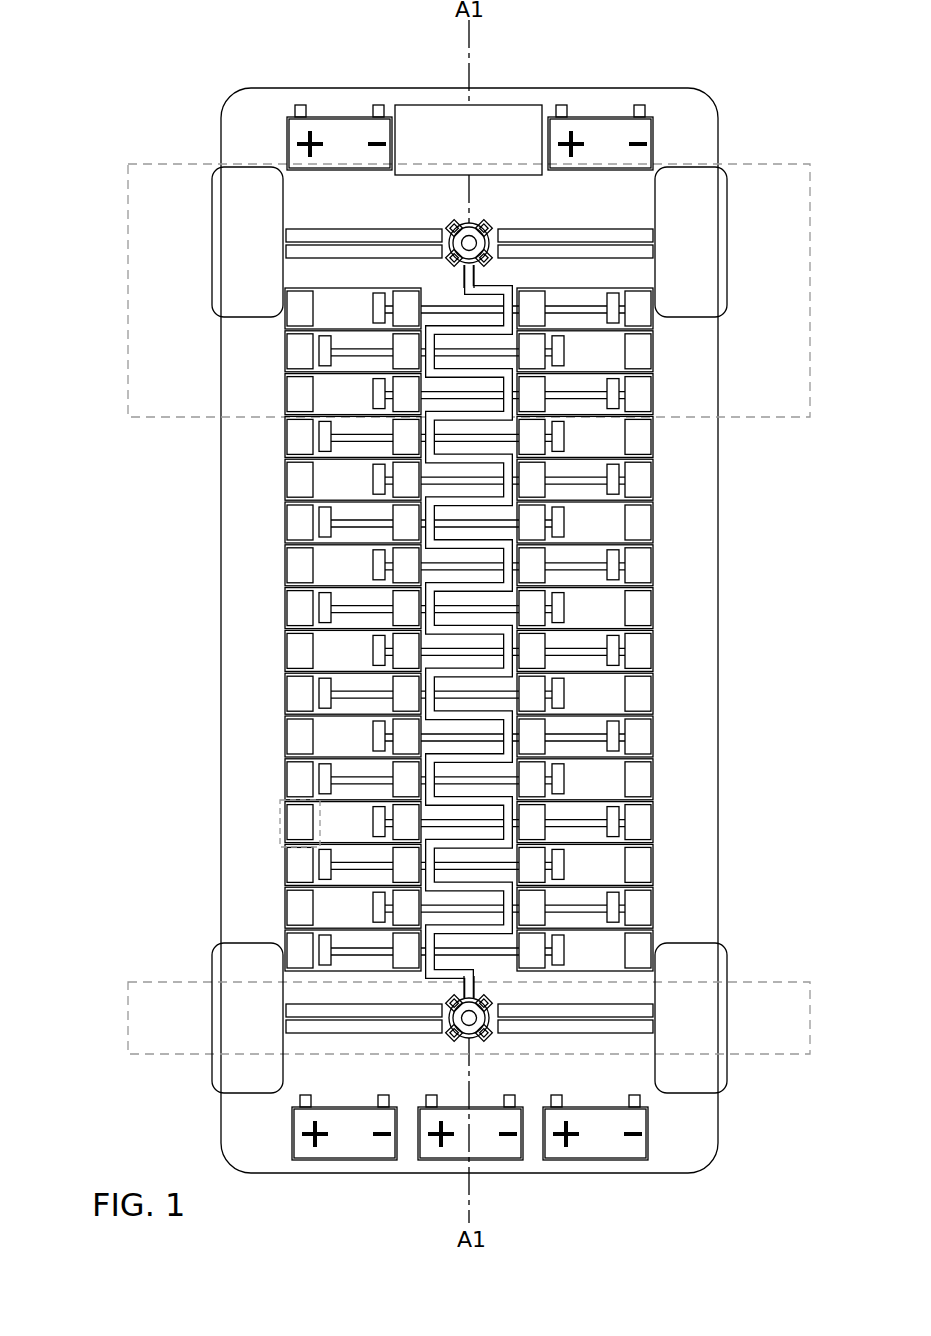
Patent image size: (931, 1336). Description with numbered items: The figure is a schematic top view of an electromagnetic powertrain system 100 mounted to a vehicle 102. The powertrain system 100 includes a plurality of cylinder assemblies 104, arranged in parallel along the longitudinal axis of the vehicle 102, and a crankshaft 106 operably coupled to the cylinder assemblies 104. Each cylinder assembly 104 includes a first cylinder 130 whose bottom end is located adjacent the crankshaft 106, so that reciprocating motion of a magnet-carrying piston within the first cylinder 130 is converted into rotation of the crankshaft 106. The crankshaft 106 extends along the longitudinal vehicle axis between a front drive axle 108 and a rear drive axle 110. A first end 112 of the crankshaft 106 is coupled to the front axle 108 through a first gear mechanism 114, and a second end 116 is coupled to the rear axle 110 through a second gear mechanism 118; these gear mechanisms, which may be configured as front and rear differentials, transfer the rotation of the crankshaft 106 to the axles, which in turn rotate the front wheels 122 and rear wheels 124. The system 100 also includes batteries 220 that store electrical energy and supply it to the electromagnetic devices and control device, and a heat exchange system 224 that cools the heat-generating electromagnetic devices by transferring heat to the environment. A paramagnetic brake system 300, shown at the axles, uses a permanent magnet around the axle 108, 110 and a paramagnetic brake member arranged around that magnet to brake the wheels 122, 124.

The electromagnetic powertrain system 100 is at (131, 99).
The vehicle 102 is at (710, 98).
The cylinder assemblies 104 is at (130, 395).
The crankshaft 106 is at (465, 583).
The front drive axle 108 is at (365, 240).
The rear drive axle 110 is at (363, 1021).
The first end of the crankshaft 112 is at (475, 270).
The first gear mechanism 114 is at (458, 225).
The second end of the crankshaft 116 is at (475, 990).
The second gear mechanism 118 is at (462, 1040).
The front wheels 122 is at (212, 183).
The rear wheels 124 is at (212, 968).
The first cylinder 130 is at (283, 822).
The batteries 220 is at (355, 115).
The heat exchange system 224 is at (515, 105).
The paramagnetic brake system 300 is at (128, 202).